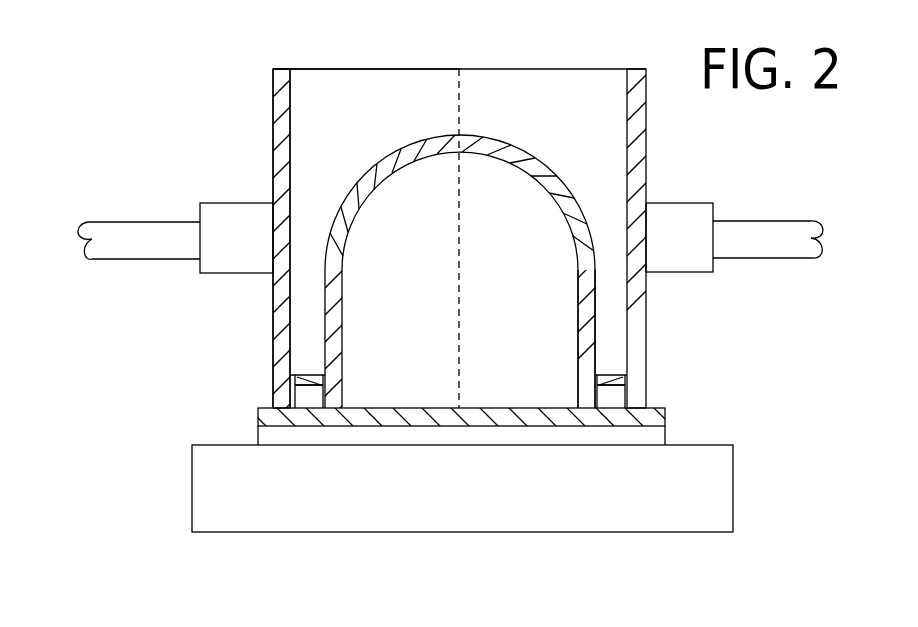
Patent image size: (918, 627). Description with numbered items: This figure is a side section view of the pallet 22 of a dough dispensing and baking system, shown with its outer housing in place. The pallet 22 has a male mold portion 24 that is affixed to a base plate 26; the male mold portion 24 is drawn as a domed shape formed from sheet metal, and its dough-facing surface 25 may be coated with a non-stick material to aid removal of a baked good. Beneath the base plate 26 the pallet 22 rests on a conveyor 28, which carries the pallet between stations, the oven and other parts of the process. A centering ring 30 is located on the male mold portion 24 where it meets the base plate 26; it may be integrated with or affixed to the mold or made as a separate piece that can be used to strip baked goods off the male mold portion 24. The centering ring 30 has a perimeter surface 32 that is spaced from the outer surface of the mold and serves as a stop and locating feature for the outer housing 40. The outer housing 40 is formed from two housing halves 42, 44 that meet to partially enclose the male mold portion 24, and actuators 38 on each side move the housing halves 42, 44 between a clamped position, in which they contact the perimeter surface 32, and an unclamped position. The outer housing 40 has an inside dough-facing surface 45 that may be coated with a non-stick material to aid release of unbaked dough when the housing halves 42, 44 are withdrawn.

The pallet 22 is at (175, 97).
The male mold portion 24 is at (596, 320).
The dough-facing surface 25 is at (531, 154).
The base plate 26 is at (257, 416).
The conveyor 28 is at (192, 480).
The centering ring 30 is at (612, 372).
The perimeter surface 32 is at (600, 382).
The actuators 38 is at (173, 222).
The outer housing 40 is at (270, 92).
The housing half 42 is at (273, 344).
The housing half 44 is at (646, 128).
The inside dough-facing surface 45 is at (290, 116).